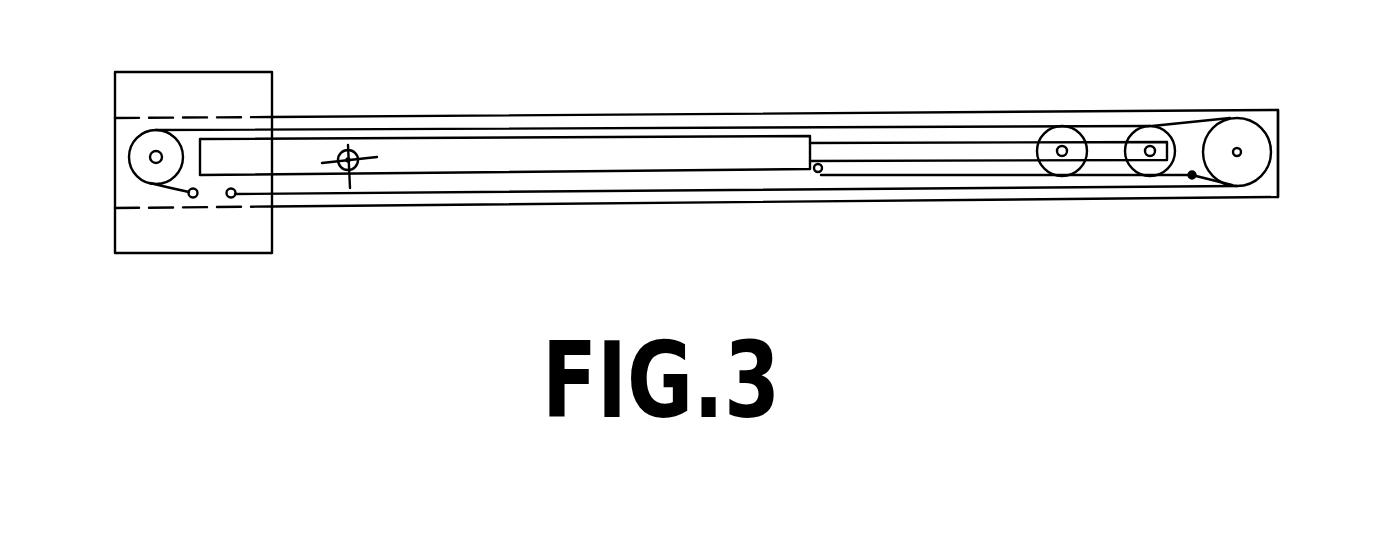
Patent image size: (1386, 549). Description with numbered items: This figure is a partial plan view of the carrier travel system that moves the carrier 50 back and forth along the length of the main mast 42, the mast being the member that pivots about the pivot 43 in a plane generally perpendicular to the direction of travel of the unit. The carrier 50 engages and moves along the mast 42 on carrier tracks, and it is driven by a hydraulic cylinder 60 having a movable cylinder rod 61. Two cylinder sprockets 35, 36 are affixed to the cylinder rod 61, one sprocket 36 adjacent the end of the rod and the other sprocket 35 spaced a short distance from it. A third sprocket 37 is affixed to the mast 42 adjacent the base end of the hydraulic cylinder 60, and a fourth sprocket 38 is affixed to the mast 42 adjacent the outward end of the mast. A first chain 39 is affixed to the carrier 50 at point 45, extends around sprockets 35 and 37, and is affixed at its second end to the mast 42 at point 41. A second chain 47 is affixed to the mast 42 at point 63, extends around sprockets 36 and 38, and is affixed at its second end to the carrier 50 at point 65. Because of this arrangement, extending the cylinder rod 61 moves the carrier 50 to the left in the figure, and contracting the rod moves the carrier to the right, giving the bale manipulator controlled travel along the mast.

The cylinder sprocket 35 is at (1065, 133).
The cylinder sprocket 36 is at (1152, 135).
The third sprocket 37 is at (157, 137).
The fourth sprocket 38 is at (1255, 147).
The first chain 39 is at (888, 127).
The point 41 is at (818, 173).
The main mast 42 is at (1265, 187).
The pivot 43 is at (350, 150).
The point 45 is at (190, 202).
The second chain 47 is at (608, 190).
The carrier 50 is at (260, 232).
The hydraulic cylinder 60 is at (613, 148).
The cylinder rod 61 is at (937, 148).
The point 63 is at (1193, 180).
The point 65 is at (229, 200).